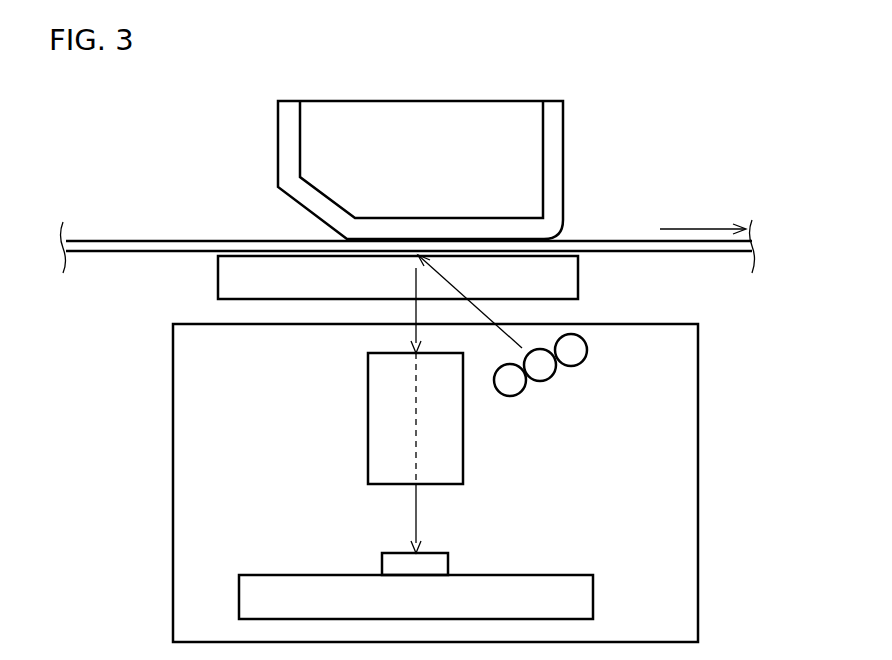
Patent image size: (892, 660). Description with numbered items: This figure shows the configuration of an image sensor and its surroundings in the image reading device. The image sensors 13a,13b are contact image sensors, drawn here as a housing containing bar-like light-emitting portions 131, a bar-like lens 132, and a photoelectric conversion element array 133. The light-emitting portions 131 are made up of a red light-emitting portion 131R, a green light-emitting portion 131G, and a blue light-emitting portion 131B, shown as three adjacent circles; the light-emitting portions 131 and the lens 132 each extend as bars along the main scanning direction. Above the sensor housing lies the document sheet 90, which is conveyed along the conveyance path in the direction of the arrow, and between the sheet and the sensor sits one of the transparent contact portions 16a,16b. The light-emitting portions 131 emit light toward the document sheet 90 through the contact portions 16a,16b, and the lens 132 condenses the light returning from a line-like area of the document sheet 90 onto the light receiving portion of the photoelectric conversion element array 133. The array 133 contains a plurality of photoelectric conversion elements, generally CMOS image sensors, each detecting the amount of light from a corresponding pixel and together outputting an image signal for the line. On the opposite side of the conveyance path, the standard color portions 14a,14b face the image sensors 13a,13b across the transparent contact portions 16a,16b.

The first and second standard color portions 14a,14b is at (563, 124).
The document sheet 90 is at (635, 241).
The first and second contact portions 16a,16b is at (218, 287).
The first and second image sensors 13a,13b is at (698, 363).
The lens 132 is at (368, 462).
The photoelectric conversion element array 133 is at (448, 560).
The light-emitting portions 131 is at (588, 407).
The red light-emitting portion 131R is at (516, 396).
The green light-emitting portion 131G is at (549, 380).
The blue light-emitting portion 131B is at (615, 373).